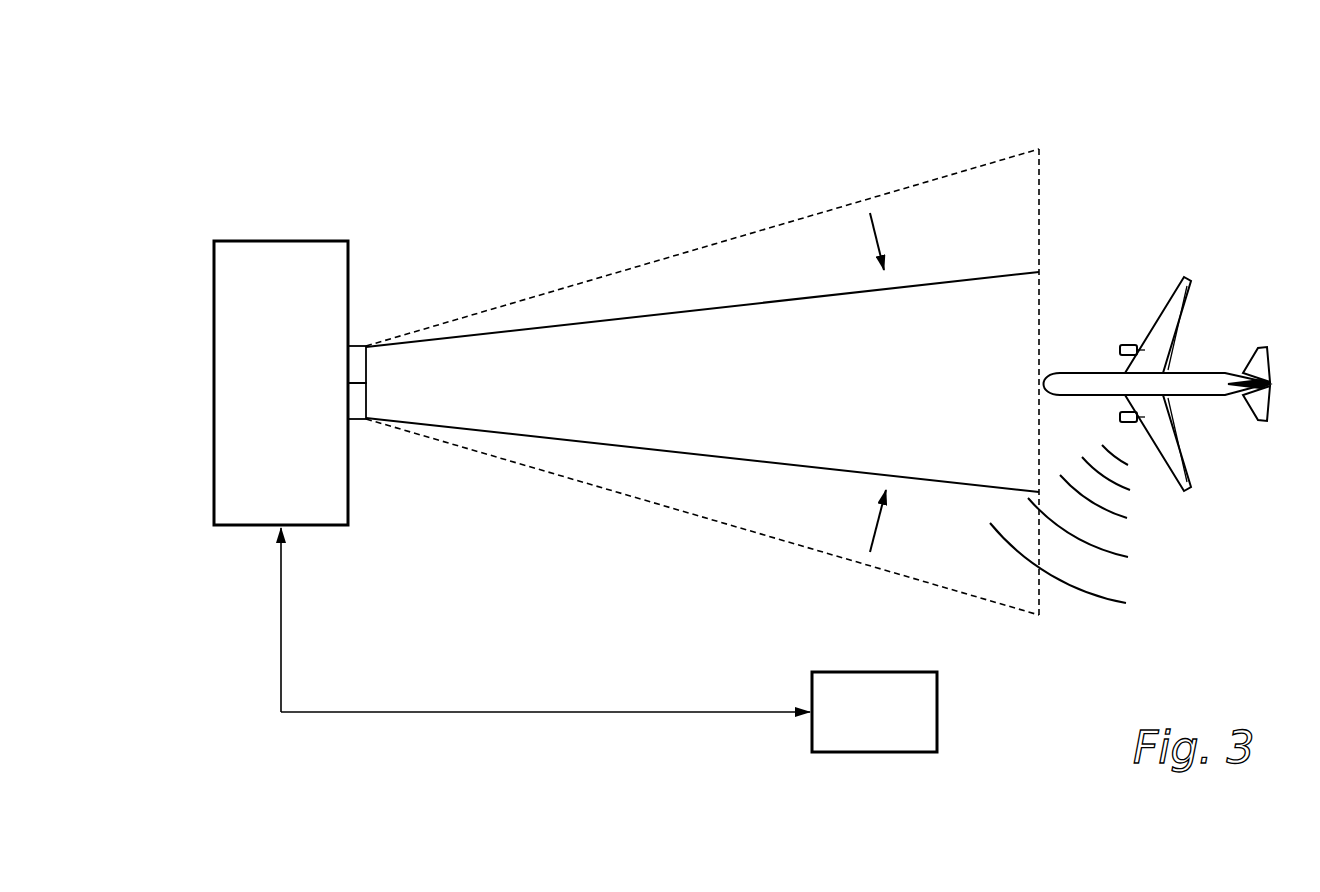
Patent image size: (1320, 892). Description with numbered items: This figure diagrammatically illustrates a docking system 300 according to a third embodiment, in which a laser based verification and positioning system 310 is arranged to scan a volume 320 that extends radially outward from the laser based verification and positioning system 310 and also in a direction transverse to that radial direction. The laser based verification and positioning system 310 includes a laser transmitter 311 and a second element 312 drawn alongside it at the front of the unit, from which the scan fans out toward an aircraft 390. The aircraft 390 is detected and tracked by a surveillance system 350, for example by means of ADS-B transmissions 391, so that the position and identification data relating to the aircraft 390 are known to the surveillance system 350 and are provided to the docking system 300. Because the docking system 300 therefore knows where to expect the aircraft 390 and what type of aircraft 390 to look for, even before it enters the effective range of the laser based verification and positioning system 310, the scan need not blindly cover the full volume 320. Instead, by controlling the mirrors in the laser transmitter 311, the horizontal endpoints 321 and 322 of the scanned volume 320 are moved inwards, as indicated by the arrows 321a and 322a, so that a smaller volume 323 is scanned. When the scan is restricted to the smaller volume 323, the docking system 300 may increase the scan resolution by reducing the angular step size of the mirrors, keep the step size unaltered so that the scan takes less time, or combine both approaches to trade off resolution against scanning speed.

The docking system 300 is at (173, 401).
The laser based verification and positioning system 310 is at (281, 383).
The laser transmitter 311 is at (355, 358).
The second antenna element 312 is at (355, 405).
The scanned volume 320 is at (689, 283).
The horizontal endpoint 321 is at (810, 215).
The horizontal endpoint 322 is at (822, 553).
The smaller volume 323 is at (645, 403).
The arrow 321a is at (877, 233).
The arrow 322a is at (880, 530).
The surveillance system 350 is at (609, 640).
The aircraft 390 is at (1087, 383).
The ADS-B transmissions 391 is at (1092, 622).